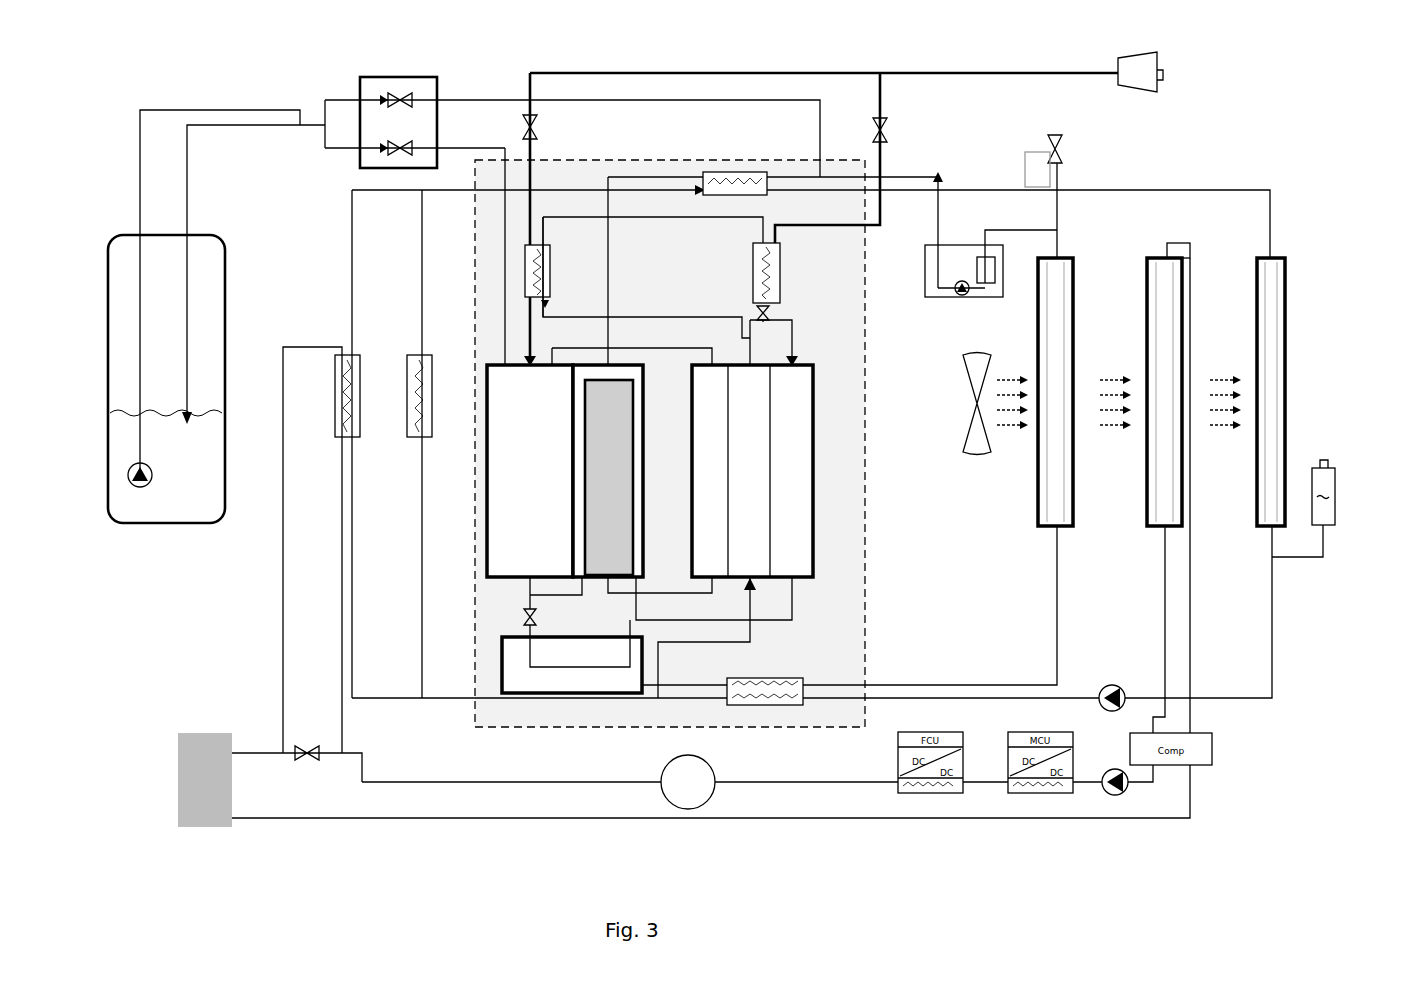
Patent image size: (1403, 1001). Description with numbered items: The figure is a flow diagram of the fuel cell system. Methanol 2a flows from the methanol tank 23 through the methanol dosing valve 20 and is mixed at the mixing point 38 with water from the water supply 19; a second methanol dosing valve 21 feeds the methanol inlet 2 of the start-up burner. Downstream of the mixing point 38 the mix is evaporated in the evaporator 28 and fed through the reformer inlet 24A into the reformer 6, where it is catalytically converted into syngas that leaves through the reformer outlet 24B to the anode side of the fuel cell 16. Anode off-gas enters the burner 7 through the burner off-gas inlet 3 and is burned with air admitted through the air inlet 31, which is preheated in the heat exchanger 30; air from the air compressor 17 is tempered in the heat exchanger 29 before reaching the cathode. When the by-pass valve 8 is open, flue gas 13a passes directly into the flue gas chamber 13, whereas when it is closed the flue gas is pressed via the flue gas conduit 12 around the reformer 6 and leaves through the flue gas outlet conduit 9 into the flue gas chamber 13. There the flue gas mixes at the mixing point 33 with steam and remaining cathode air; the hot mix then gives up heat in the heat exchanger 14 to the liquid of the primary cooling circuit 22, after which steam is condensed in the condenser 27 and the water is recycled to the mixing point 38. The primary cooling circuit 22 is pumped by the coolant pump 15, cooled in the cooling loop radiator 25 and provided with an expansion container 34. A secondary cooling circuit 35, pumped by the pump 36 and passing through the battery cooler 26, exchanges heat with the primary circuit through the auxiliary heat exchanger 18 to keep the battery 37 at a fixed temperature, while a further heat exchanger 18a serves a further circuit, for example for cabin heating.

The methanol inlet 2 is at (505, 360).
The methanol flow 2a is at (235, 110).
The burner off-gas inlet 3 is at (552, 363).
The reformer 6 is at (609, 477).
The burner 7 is at (530, 471).
The by-pass valve 8 is at (522, 617).
The flue gas outlet conduit 9 is at (618, 620).
The flue gas conduit 12 is at (530, 595).
The flue gas chamber 13 is at (502, 650).
The flue gas 13a is at (572, 668).
The heat exchanger 14 is at (780, 678).
The coolant pump 15 is at (1115, 685).
The fuel cell 16 is at (813, 513).
The air compressor 17 is at (1165, 75).
The auxiliary heat exchanger 18 is at (342, 355).
The further heat exchanger 18a is at (422, 355).
The water supply 19 is at (925, 288).
The methanol dosing valve 20 is at (400, 92).
The methanol dosing valve 21 is at (412, 148).
The primary cooling circuit 22 is at (932, 698).
The methanol tank 23 is at (166, 379).
The reformer inlet 24A is at (612, 378).
The reformer outlet 24B is at (625, 577).
The cooling loop radiator 25 is at (1283, 258).
The battery cooler 26 is at (1168, 258).
The condenser 27 is at (1060, 258).
The evaporator 28 is at (715, 172).
The heat exchanger 29 is at (753, 268).
The heat exchanger 30 is at (550, 275).
The air inlet 31 is at (530, 360).
The mixing point 33 is at (600, 665).
The expansion container 34 is at (1340, 500).
The secondary cooling circuit 35 is at (765, 782).
The pump 36 is at (662, 770).
The battery 37 is at (210, 733).
The mixing point 38 is at (820, 177).